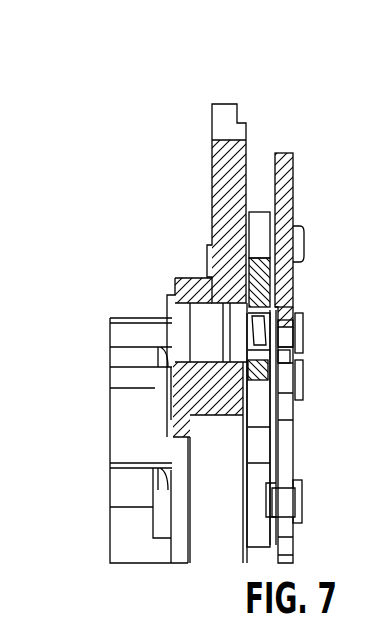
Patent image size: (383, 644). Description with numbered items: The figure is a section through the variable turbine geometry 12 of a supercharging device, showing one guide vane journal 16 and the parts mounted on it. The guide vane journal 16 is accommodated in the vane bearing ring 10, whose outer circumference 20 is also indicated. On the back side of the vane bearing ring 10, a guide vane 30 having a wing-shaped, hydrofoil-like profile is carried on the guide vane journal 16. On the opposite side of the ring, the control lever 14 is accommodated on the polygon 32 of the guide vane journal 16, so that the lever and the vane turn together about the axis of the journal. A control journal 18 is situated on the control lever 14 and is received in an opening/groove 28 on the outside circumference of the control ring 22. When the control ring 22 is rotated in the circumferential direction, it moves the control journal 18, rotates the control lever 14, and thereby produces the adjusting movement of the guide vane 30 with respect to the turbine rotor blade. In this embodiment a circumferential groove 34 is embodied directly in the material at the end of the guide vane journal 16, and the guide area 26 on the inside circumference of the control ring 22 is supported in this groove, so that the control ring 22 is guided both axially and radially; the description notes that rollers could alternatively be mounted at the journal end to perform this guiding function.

The vane bearing ring 10 is at (213, 265).
The variable turbine geometry 12 is at (140, 262).
The control lever 14 is at (268, 282).
The guide vane journal 16 is at (202, 312).
The control journal 18 is at (304, 240).
The circumference of the vane bearing ring 20 is at (225, 104).
The control ring 22 is at (288, 162).
The guide area 26 is at (297, 312).
The opening/groove 28 is at (0, 146).
The guide vane 30 is at (130, 337).
The polygon 32 is at (262, 323).
The circumferential groove 34 is at (284, 353).